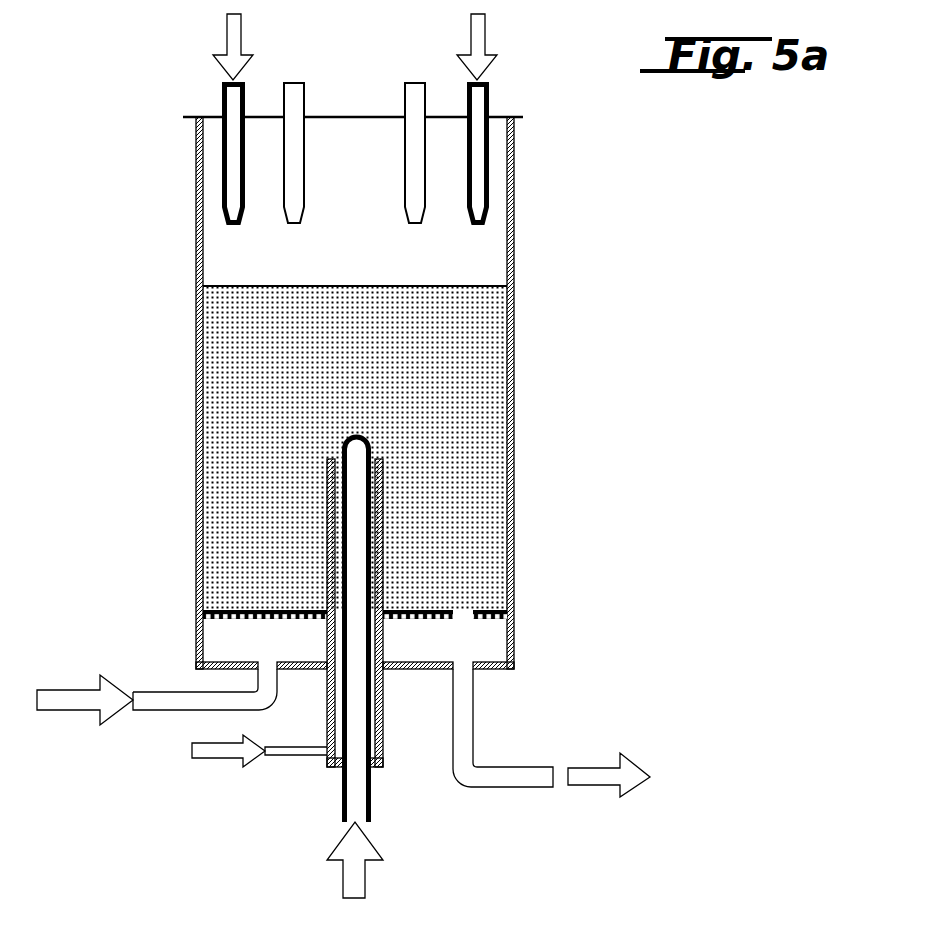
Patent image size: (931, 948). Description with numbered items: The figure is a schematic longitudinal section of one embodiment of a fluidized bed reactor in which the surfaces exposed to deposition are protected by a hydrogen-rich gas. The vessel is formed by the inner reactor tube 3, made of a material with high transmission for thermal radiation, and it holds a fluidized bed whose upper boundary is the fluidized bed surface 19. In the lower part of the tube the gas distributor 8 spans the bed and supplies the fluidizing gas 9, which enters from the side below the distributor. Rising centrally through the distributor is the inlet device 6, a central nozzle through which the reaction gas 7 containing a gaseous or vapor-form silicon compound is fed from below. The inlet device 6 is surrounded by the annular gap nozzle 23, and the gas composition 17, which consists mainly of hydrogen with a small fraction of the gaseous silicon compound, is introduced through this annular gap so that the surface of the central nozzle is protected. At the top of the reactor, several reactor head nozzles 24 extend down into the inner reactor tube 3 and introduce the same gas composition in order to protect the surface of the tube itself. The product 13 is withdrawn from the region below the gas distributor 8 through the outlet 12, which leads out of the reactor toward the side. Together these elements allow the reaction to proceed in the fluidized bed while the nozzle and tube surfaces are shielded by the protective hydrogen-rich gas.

The inner reactor tube 3 is at (515, 335).
The fluidized bed surface 19 is at (472, 285).
The reactor head nozzles 24 is at (232, 166).
The gas distributor 8 is at (277, 610).
The annular gap nozzle 23 is at (373, 480).
The inlet device 6 is at (347, 437).
The fluidizing gas 9 is at (72, 700).
The gas composition 17 is at (217, 752).
The outlet 12 is at (510, 775).
The product 13 is at (590, 775).
The reaction gas 7 is at (358, 878).